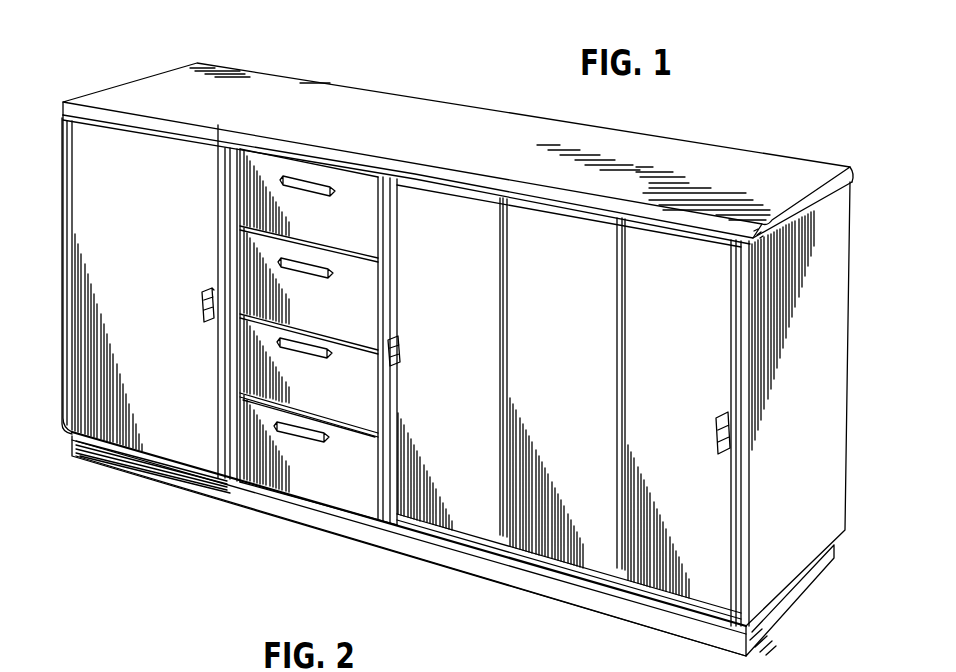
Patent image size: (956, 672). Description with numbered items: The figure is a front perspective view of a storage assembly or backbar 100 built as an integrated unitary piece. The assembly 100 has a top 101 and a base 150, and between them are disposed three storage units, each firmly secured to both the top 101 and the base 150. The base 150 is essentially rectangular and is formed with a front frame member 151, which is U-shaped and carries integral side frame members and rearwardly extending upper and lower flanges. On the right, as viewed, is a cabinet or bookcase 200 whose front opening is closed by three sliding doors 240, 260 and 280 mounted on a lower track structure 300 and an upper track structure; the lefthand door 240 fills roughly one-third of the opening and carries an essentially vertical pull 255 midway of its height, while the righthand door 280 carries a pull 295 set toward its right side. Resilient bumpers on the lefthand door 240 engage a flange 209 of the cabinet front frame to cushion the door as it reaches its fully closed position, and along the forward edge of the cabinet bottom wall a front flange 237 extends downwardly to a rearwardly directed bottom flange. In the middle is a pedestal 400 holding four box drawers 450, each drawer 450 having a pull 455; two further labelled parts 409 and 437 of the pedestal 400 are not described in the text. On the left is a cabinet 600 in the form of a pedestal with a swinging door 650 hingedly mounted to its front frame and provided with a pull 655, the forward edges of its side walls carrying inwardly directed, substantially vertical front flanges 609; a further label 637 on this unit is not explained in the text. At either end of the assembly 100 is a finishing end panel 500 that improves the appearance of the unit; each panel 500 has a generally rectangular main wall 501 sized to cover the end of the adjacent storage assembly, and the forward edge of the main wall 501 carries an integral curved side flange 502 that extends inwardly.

In FIG. 1, the storage assembly 100 is at (458, 315).
In FIG. 2, the storage assembly 100 is at (118, 671).
In FIG. 1, the top 101 is at (298, 106).
In FIG. 1, the base 150 is at (257, 515).
In FIG. 1, the front frame member 151 is at (554, 524).
In FIG. 1, the cabinet 200 is at (410, 410).
In FIG. 1, the flange 209 is at (405, 472).
In FIG. 1, the front flange 237 is at (670, 603).
In FIG. 1, the lefthand sliding door 240 is at (442, 495).
In FIG. 1, the pull 255 is at (398, 352).
In FIG. 1, the sliding door 260 is at (553, 222).
In FIG. 1, the righthand sliding door 280 is at (648, 236).
In FIG. 1, the pull 295 is at (717, 440).
In FIG. 1, the lower track structure 300 is at (569, 564).
In FIG. 1, the pedestal 400 is at (462, 395).
In FIG. 1, the drawer unit frame 409 is at (234, 362).
In FIG. 1, the drawer front 437 is at (315, 508).
In FIG. 1, the drawer 450 is at (300, 173).
In FIG. 1, the pull 455 is at (313, 187).
In FIG. 1, the finishing end panel 500 is at (61, 158).
In FIG. 1, the main wall 501 is at (808, 449).
In FIG. 1, the curved side flange 502 is at (64, 255).
In FIG. 1, the cabinet with swinging door 600 is at (122, 317).
In FIG. 1, the front flange 609 is at (230, 186).
In FIG. 1, the kick plate 637 is at (90, 457).
In FIG. 1, the door 650 is at (84, 386).
In FIG. 1, the pull 655 is at (202, 304).